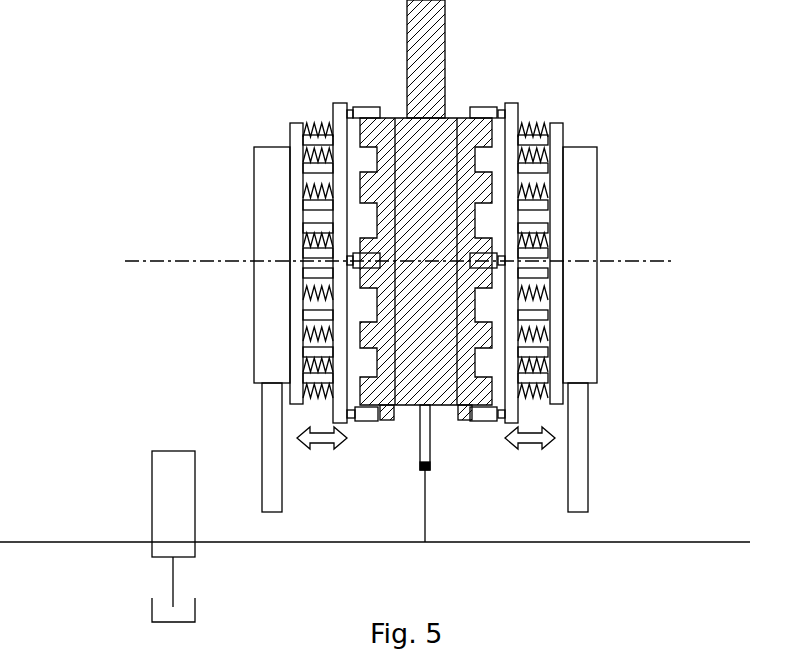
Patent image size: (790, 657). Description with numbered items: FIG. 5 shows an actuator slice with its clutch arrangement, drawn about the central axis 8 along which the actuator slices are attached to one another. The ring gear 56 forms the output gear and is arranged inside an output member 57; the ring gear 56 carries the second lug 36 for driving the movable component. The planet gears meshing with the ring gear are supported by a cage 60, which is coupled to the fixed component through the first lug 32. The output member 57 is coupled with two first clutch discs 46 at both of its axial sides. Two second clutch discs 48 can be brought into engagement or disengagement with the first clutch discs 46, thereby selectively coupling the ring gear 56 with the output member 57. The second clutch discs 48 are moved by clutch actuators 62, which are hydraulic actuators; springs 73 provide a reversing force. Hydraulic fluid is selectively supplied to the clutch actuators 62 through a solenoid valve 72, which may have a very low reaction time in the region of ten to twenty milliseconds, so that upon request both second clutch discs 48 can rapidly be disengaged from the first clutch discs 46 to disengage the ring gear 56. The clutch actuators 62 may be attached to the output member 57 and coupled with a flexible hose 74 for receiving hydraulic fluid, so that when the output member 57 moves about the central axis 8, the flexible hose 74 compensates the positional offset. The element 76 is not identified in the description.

The central axis 8 is at (645, 260).
The second lug 36 is at (435, 48).
The ring gear 56 is at (422, 141).
The output member 57 is at (447, 126).
The second clutch discs 48 is at (338, 117).
The springs 73 is at (540, 182).
The cage 60 is at (267, 355).
The first lug 32 is at (268, 452).
The clutch actuators 62 is at (367, 417).
The first clutch discs 46 is at (385, 413).
The flexible hose 74 is at (425, 440).
The solenoid valve 72 is at (160, 486).
The base 76 is at (375, 599).